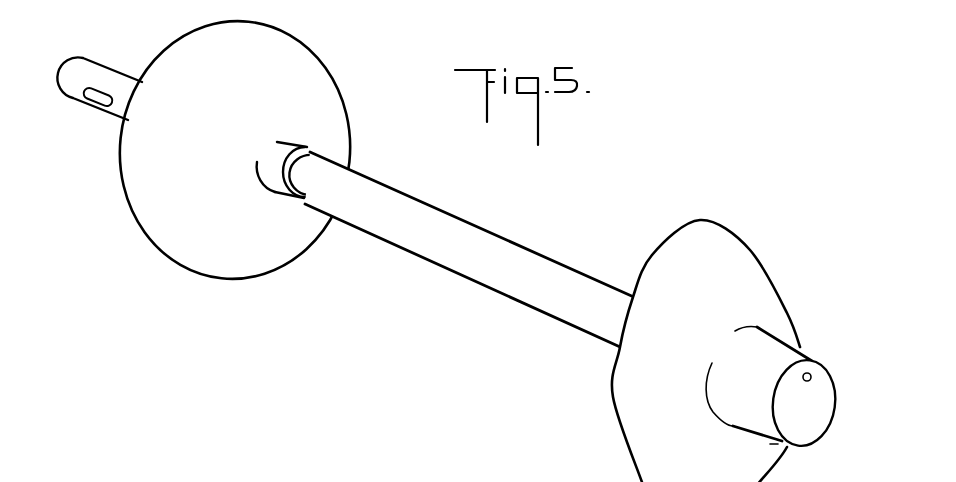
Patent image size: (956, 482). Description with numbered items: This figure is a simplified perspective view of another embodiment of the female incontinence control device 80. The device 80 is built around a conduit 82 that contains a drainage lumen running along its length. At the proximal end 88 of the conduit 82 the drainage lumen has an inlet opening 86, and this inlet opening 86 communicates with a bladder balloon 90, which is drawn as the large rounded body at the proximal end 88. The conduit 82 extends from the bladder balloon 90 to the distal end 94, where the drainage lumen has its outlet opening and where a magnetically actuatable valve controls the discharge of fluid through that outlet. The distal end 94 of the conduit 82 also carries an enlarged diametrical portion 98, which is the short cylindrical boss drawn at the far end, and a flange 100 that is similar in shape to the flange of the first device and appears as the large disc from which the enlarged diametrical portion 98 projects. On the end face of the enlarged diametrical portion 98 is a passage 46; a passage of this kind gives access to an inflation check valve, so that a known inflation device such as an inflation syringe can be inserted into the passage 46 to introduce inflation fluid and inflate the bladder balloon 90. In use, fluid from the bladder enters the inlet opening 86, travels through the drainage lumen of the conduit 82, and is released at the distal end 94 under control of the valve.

The female incontinence control device 80 is at (557, 215).
The conduit 82 is at (480, 226).
The inlet opening 86 is at (97, 102).
The proximal end 88 is at (90, 56).
The bladder balloon 90 is at (328, 62).
The distal end 94 is at (773, 443).
The enlarged diametrical portion 98 is at (793, 342).
The flange 100 is at (715, 220).
The passage 46 is at (813, 370).